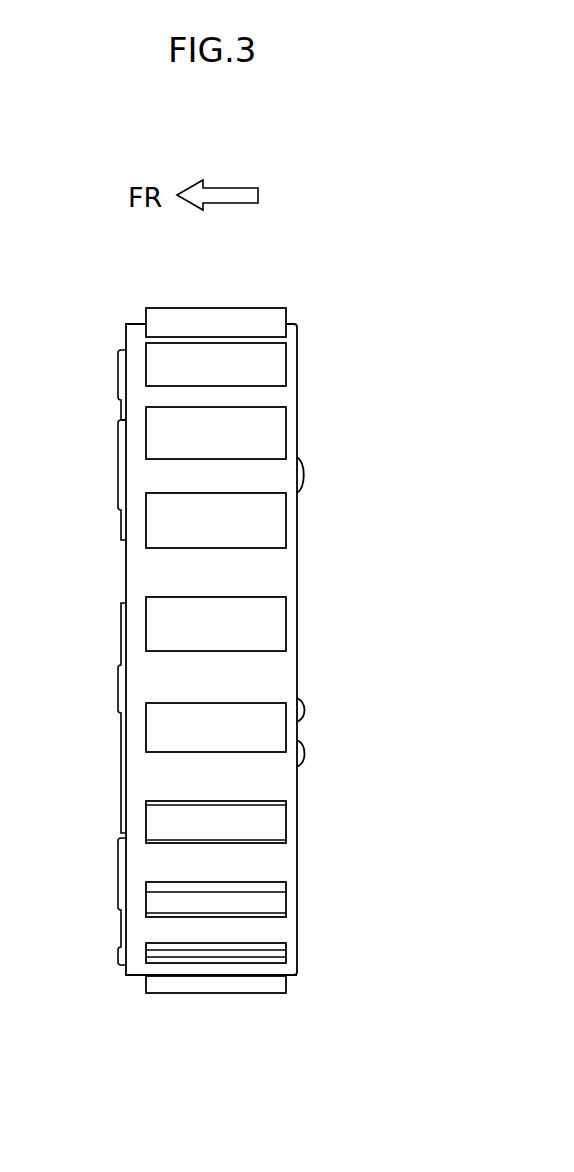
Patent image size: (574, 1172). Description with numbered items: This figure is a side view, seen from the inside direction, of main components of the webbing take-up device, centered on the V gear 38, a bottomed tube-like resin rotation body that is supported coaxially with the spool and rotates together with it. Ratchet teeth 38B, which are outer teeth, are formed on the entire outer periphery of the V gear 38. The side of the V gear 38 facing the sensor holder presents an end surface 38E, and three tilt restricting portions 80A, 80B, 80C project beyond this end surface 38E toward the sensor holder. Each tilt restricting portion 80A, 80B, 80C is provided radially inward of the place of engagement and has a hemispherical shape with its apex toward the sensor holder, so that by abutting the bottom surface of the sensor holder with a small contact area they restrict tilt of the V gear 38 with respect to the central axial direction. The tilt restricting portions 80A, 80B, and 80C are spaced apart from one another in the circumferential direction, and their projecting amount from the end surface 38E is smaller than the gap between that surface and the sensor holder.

The V gear 38 is at (123, 322).
The ratchet teeth 38B is at (240, 363).
The end surface 38E is at (297, 338).
The tilt restricting portion 80A is at (304, 475).
The tilt restricting portion 80B is at (305, 710).
The tilt restricting portion 80C is at (305, 753).